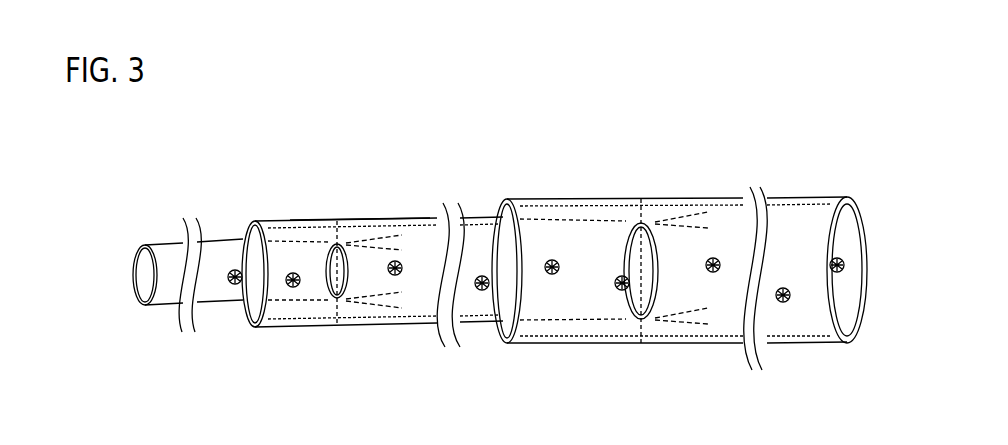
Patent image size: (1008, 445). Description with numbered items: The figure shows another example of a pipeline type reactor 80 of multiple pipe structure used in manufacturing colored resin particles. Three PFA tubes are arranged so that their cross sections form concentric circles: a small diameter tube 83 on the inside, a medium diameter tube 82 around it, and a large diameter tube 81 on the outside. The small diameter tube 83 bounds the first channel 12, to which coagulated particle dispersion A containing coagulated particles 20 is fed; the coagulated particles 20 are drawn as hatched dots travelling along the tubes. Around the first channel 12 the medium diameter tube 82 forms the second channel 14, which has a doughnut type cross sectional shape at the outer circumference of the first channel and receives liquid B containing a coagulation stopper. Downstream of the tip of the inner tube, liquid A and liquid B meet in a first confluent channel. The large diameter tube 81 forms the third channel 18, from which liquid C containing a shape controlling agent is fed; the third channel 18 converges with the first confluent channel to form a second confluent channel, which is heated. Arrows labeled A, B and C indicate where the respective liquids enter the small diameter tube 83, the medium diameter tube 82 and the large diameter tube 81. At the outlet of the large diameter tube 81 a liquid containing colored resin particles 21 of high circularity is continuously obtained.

The reactor 80 is at (290, 150).
The small diameter tube 83 is at (156, 244).
The first channel 12 is at (276, 256).
The second channel 14 is at (305, 235).
The medium diameter tube 82 is at (367, 222).
The third channel 18 is at (548, 208).
The large diameter tube 81 is at (580, 199).
The coagulated particles 20 is at (297, 292).
The colored resin particles 21 is at (830, 318).
The coagulated particle dispersion A is at (146, 275).
The liquid containing a coagulation stopper B is at (246, 236).
The liquid containing a shape controlling agent C is at (499, 213).